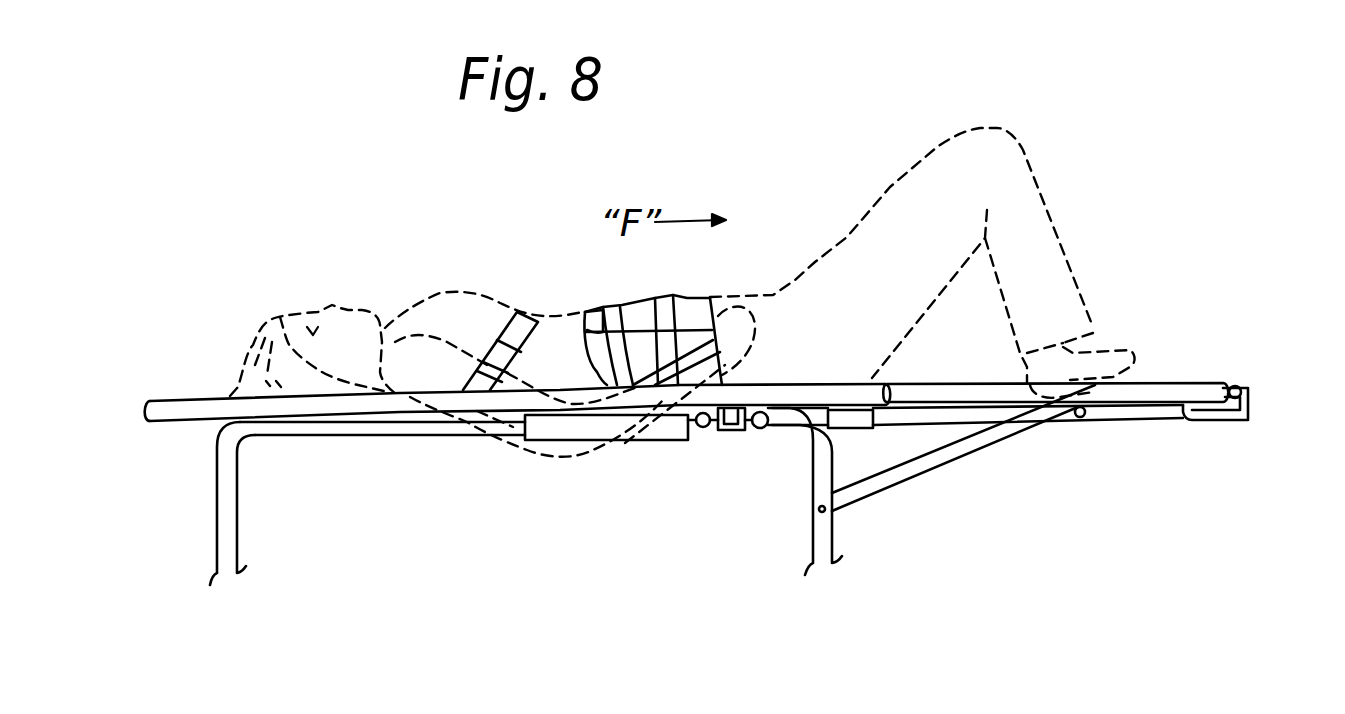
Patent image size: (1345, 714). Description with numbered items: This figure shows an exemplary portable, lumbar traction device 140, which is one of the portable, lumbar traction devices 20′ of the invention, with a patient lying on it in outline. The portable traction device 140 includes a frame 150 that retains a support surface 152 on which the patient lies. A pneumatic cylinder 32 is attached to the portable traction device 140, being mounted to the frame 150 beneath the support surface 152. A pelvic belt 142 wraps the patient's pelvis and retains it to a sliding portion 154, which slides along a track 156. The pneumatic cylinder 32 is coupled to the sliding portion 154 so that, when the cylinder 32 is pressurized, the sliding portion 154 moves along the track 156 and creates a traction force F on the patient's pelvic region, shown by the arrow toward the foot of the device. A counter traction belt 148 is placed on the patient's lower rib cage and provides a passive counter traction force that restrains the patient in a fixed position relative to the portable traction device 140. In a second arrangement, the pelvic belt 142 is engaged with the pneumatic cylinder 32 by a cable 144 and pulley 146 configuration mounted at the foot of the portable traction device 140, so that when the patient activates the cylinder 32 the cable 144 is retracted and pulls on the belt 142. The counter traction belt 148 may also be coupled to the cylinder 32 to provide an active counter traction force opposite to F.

The portable, lumbar traction device 20′ is at (549, 470).
The pneumatic cylinder 32 is at (664, 432).
The portable, lumbar traction device 140 is at (141, 418).
The pelvic belt 142 is at (690, 305).
The cable 144 is at (1137, 420).
The pulley 146 is at (1240, 385).
The counter traction belt 148 is at (533, 314).
The frame 150 is at (238, 510).
The support surface 152 is at (172, 396).
The sliding portion 154 is at (797, 403).
The track 156 is at (1151, 392).